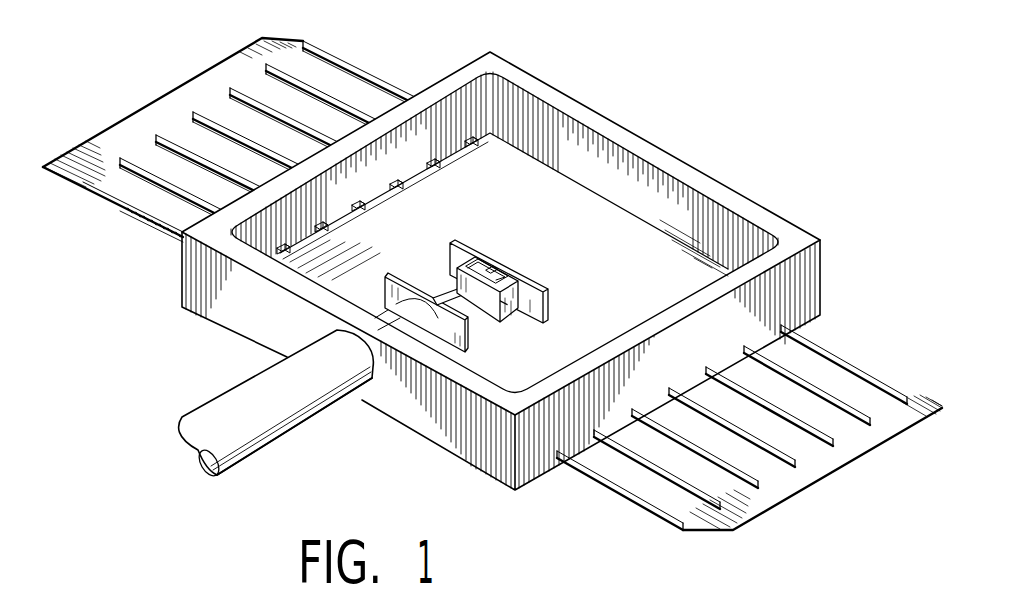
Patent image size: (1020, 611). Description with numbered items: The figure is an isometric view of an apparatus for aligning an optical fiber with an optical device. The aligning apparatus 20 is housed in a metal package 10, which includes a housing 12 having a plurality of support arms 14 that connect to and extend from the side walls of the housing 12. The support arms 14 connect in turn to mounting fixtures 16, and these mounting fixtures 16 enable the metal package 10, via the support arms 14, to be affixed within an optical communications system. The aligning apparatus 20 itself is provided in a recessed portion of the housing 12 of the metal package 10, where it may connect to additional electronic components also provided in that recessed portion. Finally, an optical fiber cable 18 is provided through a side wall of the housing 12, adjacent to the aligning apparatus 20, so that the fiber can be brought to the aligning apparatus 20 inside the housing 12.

The metal package 10 is at (492, 297).
The housing 12 is at (822, 270).
The support arms 14 is at (352, 68).
The mounting fixtures 16 is at (235, 70).
The optical fiber cable 18 is at (297, 436).
The aligning apparatus 20 is at (490, 232).